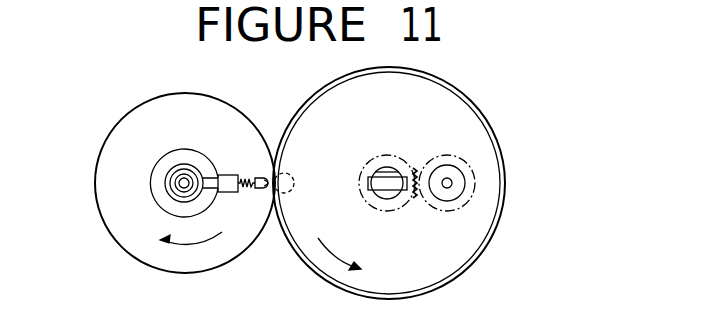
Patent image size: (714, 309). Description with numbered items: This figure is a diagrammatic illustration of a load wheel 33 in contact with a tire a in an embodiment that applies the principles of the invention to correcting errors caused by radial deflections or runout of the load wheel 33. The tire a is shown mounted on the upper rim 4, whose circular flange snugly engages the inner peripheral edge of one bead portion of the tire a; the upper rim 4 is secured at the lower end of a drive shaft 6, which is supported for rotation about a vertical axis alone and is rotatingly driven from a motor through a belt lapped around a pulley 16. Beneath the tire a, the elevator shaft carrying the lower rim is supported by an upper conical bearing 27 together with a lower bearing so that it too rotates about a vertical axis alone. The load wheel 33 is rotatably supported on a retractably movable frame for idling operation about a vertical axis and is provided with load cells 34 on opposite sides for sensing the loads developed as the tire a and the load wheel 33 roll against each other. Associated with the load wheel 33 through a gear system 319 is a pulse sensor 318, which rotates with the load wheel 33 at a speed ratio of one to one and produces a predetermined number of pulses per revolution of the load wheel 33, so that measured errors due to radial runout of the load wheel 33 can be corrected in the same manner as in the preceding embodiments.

The tire a is at (153, 98).
The upper rim 4 is at (153, 178).
The drive shaft 6 is at (177, 185).
The pulley 16 is at (247, 177).
The upper conical bearing 27 is at (230, 192).
The load wheel 33 is at (490, 128).
The load cells 34 is at (368, 184).
The pulse sensor 318 is at (467, 180).
The gear system 319 is at (433, 153).